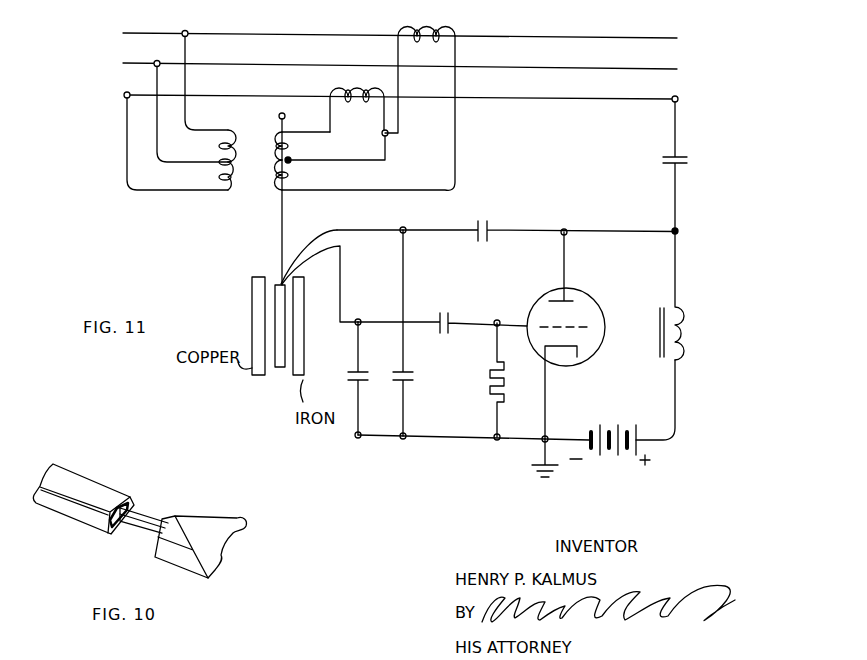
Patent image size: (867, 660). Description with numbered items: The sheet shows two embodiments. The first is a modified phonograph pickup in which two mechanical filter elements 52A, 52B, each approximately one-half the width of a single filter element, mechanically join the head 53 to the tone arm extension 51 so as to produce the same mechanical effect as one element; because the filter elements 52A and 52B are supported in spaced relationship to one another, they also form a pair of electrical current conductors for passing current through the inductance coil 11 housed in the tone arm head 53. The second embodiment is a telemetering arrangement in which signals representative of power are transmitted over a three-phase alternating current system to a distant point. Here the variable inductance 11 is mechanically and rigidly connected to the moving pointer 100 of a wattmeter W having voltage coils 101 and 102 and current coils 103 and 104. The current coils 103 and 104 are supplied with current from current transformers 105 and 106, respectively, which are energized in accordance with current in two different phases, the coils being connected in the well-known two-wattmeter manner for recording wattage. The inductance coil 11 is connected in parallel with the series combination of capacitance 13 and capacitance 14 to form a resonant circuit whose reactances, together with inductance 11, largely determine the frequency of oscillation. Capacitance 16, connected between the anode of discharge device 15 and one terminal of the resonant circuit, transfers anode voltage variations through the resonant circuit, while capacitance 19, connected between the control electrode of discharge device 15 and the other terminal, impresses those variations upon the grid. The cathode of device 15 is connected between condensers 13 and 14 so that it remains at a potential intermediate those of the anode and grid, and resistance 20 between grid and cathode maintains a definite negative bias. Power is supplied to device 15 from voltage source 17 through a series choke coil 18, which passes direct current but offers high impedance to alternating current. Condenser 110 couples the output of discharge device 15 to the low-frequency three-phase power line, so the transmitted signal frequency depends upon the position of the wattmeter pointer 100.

In FIG. 11, the wattmeter W is at (228, 200).
In FIG. 11, the moving pointer 100 is at (278, 202).
In FIG. 11, the voltage coil 101 is at (224, 151).
In FIG. 11, the voltage coil 102 is at (224, 178).
In FIG. 11, the current coil 103 is at (287, 146).
In FIG. 11, the current coil 104 is at (288, 176).
In FIG. 11, the current transformer 105 is at (336, 116).
In FIG. 11, the current transformer 106 is at (455, 44).
In FIG. 11, the condenser 110 is at (682, 168).
In FIG. 11, the variable inductance coil 11 is at (284, 372).
In FIG. 11, the capacitance 13 is at (355, 383).
In FIG. 11, the capacitance 14 is at (413, 382).
In FIG. 11, the discharge device 15 is at (596, 319).
In FIG. 11, the capacitance 16 is at (490, 228).
In FIG. 11, the voltage source 17 is at (615, 432).
In FIG. 11, the choke coil 18 is at (680, 357).
In FIG. 11, the capacitance 19 is at (450, 318).
In FIG. 11, the resistance 20 is at (490, 395).
In FIG. 10, the tone arm extension 51 is at (95, 490).
In FIG. 10, the filter element 52A is at (145, 520).
In FIG. 10, the filter element 52B is at (137, 530).
In FIG. 10, the head 53 is at (233, 528).